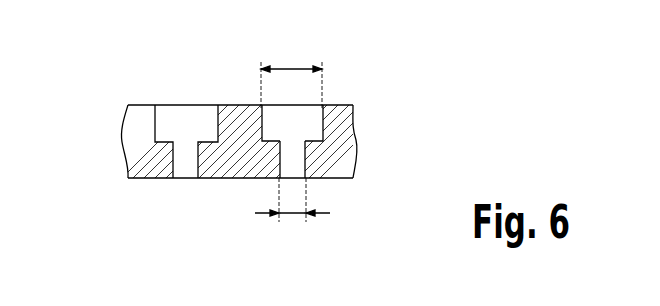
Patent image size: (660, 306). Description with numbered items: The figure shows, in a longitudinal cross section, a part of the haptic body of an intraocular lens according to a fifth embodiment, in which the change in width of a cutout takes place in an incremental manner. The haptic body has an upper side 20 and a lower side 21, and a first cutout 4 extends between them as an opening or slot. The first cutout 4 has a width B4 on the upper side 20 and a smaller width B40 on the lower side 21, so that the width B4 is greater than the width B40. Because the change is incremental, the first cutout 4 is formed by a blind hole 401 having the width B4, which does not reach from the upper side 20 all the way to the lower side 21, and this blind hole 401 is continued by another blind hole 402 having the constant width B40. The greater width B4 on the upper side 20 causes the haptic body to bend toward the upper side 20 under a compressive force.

The upper side 20 is at (140, 105).
The lower side 21 is at (141, 178).
The first cutout 4 is at (286, 123).
The blind hole 401 is at (313, 122).
The blind hole 402 is at (298, 159).
The width B4 is at (291, 73).
The width B40 is at (292, 215).